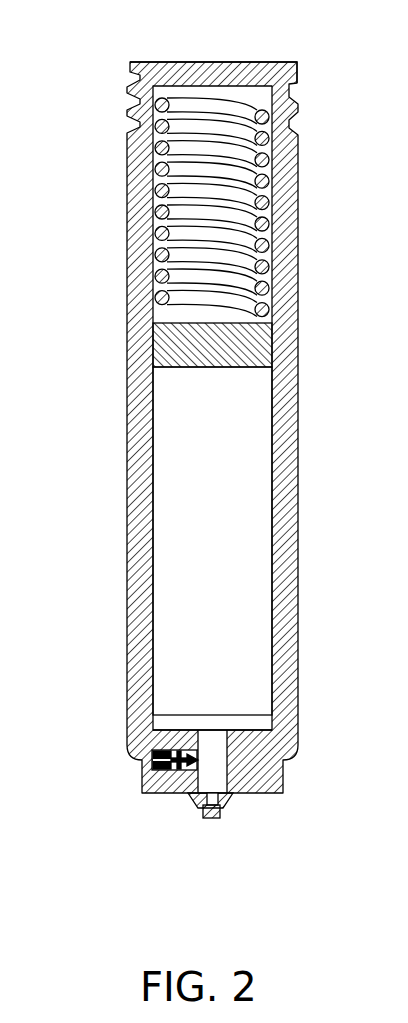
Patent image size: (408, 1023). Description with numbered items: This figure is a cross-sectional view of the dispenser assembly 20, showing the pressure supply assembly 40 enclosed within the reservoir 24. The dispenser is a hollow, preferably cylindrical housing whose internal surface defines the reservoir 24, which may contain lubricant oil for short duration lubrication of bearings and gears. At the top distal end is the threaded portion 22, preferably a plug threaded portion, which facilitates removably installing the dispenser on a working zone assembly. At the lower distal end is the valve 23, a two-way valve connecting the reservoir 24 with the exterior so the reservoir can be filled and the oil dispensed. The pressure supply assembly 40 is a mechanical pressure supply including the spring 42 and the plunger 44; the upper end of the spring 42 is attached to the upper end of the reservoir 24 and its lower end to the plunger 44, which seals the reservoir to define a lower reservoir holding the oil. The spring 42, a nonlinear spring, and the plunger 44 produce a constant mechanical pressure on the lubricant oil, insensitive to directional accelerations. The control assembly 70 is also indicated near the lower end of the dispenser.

The dispenser assembly 20 is at (198, 440).
The threaded portion 22 is at (296, 89).
The valve 23 is at (207, 785).
The reservoir 24 is at (175, 521).
The pressure supply assembly 40 is at (155, 302).
The spring 42 is at (212, 100).
The plunger 44 is at (258, 337).
The control assembly 70 is at (143, 764).